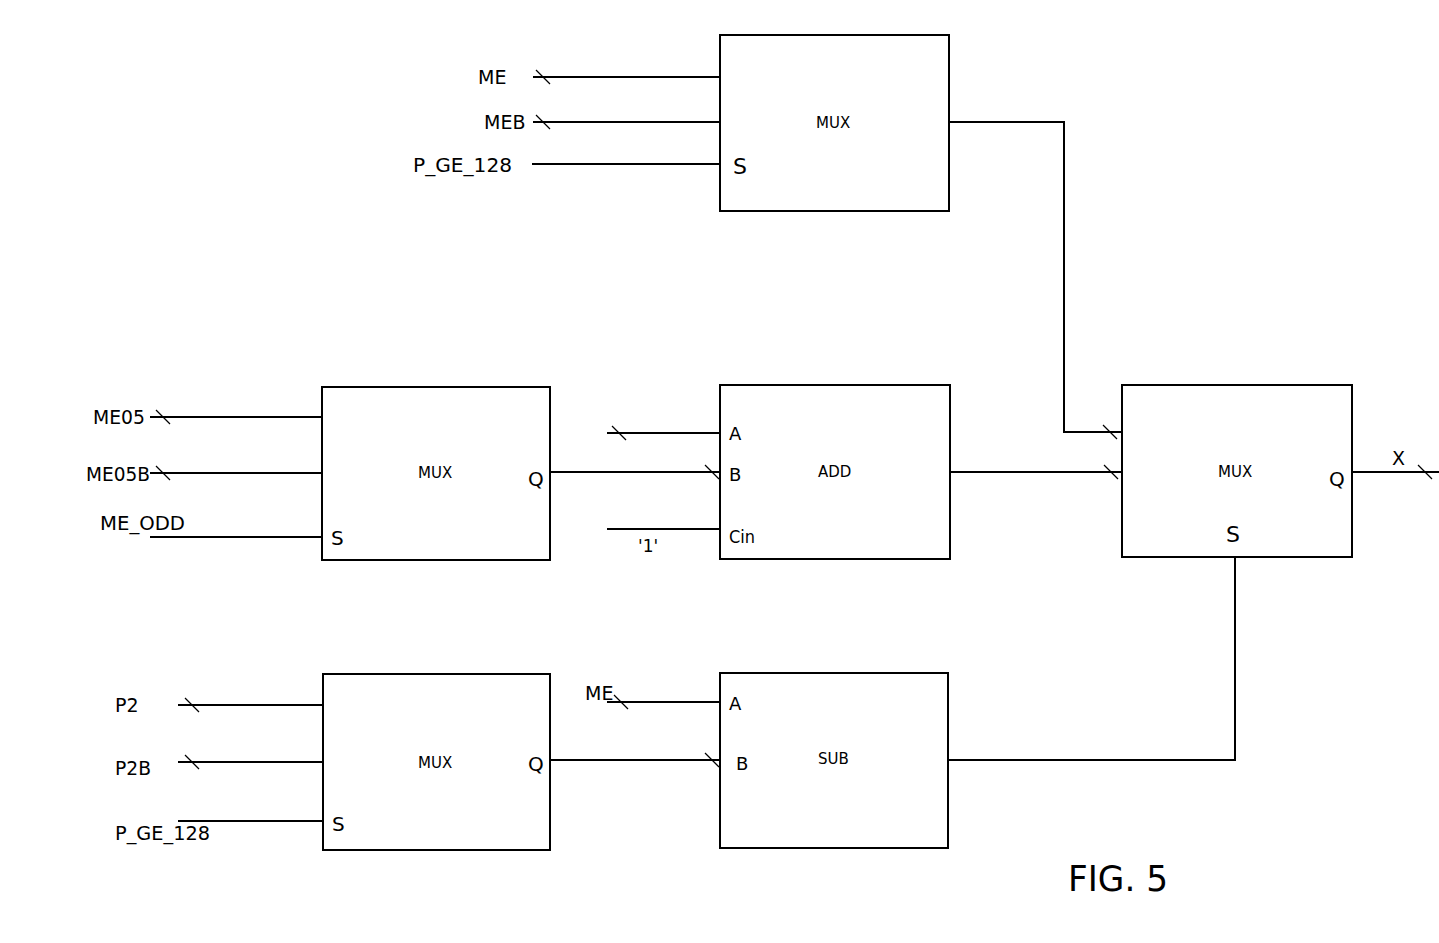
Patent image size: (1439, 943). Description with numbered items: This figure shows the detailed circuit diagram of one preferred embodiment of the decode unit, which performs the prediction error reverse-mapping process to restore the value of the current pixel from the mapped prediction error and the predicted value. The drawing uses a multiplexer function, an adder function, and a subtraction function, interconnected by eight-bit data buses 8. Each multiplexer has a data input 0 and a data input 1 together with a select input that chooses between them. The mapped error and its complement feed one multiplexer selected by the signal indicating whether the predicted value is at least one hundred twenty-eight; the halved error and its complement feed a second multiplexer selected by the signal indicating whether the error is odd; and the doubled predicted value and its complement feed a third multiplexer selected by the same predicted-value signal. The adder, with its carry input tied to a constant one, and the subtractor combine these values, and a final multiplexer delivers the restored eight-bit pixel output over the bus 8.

The 8-bit data bus 8 is at (794, 412).
The multiplexer input 0 is at (737, 392).
The multiplexer input 1 is at (737, 443).